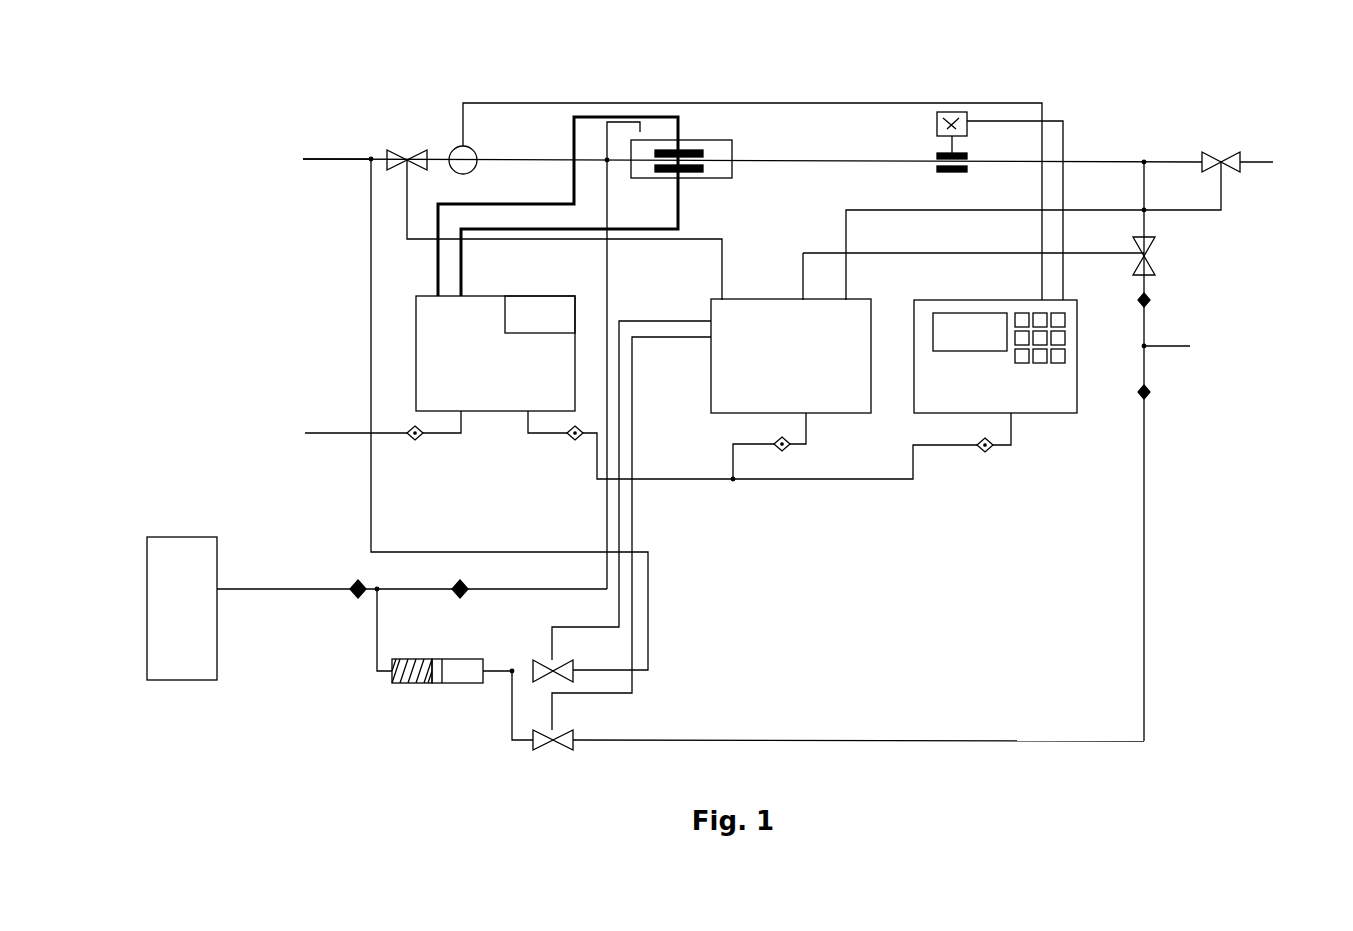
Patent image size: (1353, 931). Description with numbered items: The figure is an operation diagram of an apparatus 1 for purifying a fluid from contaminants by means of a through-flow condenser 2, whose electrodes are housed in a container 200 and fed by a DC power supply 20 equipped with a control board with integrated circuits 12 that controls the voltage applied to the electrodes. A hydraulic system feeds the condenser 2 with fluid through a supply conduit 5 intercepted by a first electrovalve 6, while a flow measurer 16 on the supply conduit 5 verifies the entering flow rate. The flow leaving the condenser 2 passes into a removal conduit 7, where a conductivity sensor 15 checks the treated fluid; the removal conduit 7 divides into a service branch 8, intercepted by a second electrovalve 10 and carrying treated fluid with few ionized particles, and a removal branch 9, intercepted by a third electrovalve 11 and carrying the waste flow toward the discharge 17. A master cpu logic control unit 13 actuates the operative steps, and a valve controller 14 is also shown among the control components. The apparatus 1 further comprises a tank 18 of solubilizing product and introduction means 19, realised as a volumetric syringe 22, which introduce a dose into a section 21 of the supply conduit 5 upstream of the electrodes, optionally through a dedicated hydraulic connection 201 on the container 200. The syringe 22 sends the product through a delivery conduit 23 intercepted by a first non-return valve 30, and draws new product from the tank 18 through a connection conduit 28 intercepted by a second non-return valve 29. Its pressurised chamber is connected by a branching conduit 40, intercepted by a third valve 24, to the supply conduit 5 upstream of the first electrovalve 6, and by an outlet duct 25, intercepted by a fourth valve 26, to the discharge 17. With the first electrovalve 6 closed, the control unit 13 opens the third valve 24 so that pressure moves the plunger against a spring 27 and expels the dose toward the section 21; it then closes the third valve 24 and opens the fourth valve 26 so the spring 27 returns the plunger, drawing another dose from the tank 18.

The apparatus for purifying a fluid 1 is at (237, 165).
The through-flow condenser 2 is at (692, 140).
The supply conduit 5 is at (306, 158).
The first electrovalve 6 is at (416, 150).
The removal conduit 7 is at (795, 160).
The service branch 8 is at (1166, 160).
The removal branch 9 is at (1147, 212).
The second electrovalve 10 is at (1244, 173).
The third electrovalve 11 is at (1158, 268).
The control board with integrated circuits 12 is at (540, 314).
The master cpu logic control unit 13 is at (1067, 403).
The valve controller 14 is at (863, 398).
The conductivity sensor 15 is at (958, 114).
The flow measurer 16 is at (470, 148).
The discharge 17 is at (1182, 348).
The tank 18 is at (192, 662).
The introduction means 19 is at (347, 766).
The DC power supply 20 is at (425, 328).
The section of the supply conduit 21 is at (592, 133).
The volumetric syringe 22 is at (443, 684).
The delivery conduit 23 is at (612, 243).
The third valve 24 is at (541, 662).
The outlet duct 25 is at (814, 740).
The fourth valve 26 is at (562, 749).
The spring 27 is at (403, 684).
The connection conduit 28 is at (377, 630).
The second non-return valve 29 is at (358, 585).
The first non-return valve 30 is at (462, 596).
The branching conduit 40 is at (371, 276).
The container 200 is at (725, 140).
The dedicated hydraulic connection 201 is at (620, 120).